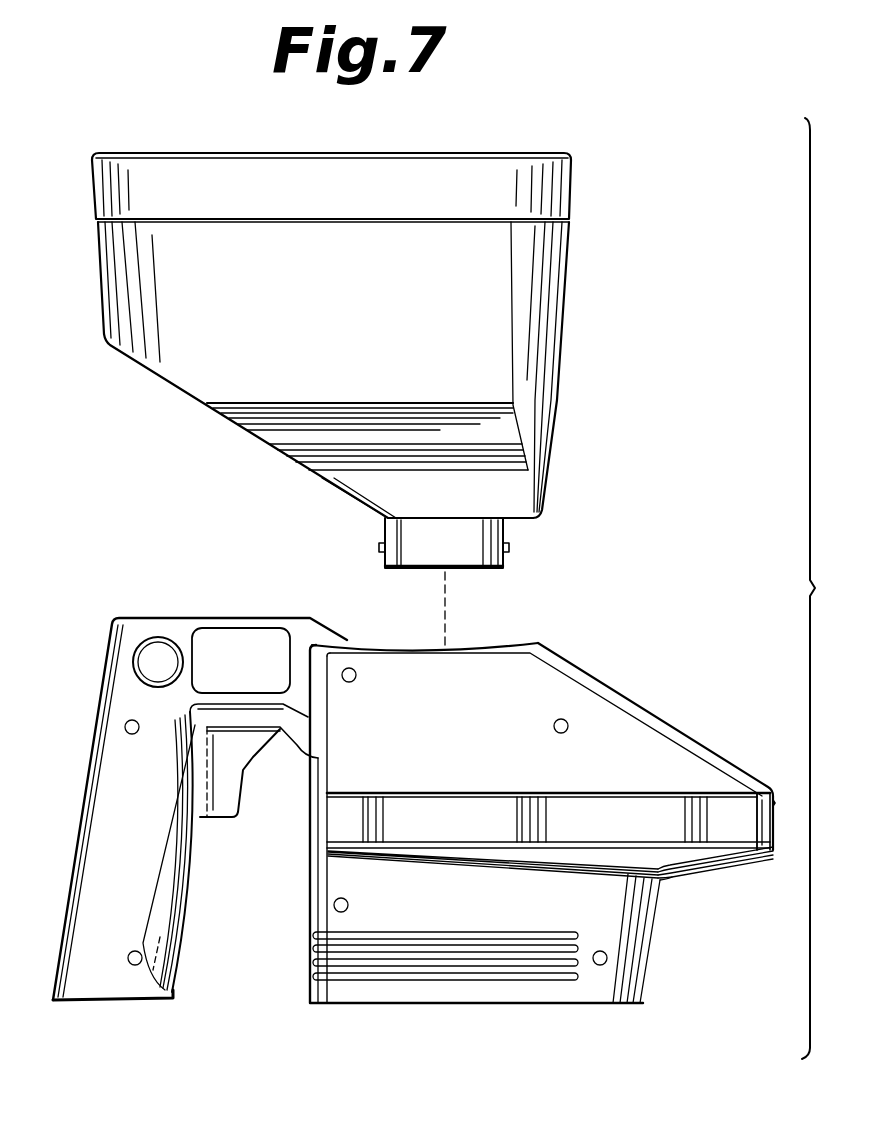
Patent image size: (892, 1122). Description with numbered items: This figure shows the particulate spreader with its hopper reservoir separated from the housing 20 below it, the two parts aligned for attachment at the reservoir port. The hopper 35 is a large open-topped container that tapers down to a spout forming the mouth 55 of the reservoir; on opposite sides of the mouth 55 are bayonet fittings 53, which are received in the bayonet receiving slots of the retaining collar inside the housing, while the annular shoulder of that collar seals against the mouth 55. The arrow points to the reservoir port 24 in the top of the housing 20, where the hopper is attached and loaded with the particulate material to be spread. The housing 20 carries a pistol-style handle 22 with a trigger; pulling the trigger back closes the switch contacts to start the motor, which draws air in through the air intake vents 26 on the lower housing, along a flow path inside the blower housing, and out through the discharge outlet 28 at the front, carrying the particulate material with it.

The gun body housing 20 is at (638, 727).
The handle 22 is at (183, 905).
The hopper inlet opening 24 is at (423, 636).
The vent slots 26 is at (433, 963).
The nozzle outlet 28 is at (770, 822).
The hopper 35 is at (543, 330).
The bayonet fittings 53 is at (379, 548).
The mouth 55 is at (503, 567).